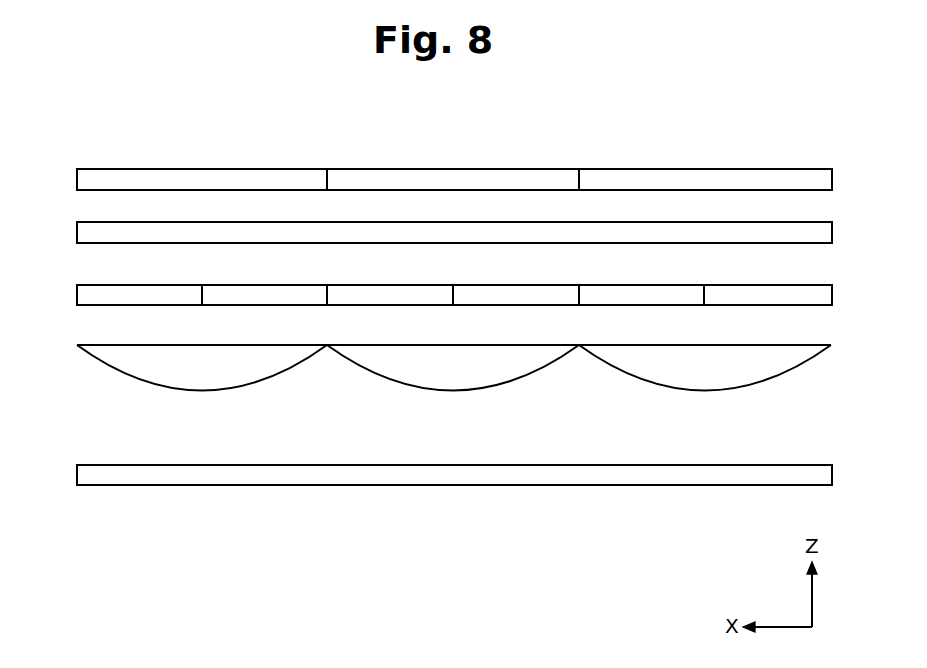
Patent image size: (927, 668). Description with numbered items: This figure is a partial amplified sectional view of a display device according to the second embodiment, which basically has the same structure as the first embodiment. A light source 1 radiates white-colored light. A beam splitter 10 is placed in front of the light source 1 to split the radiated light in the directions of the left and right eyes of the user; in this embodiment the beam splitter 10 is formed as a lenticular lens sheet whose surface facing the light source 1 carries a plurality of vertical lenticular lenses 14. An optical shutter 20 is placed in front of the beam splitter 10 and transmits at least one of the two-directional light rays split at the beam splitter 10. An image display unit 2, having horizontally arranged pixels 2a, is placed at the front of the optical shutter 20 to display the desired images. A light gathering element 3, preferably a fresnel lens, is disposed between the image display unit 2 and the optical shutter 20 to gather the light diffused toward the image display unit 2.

The light source 1 is at (77, 475).
The image display unit 2 is at (766, 170).
The pixels 2a is at (497, 169).
The light gathering element 3 is at (77, 233).
The optical shutter 20 is at (77, 293).
The beam splitter 10 is at (454, 383).
The lenticular lenses 14 is at (144, 372).